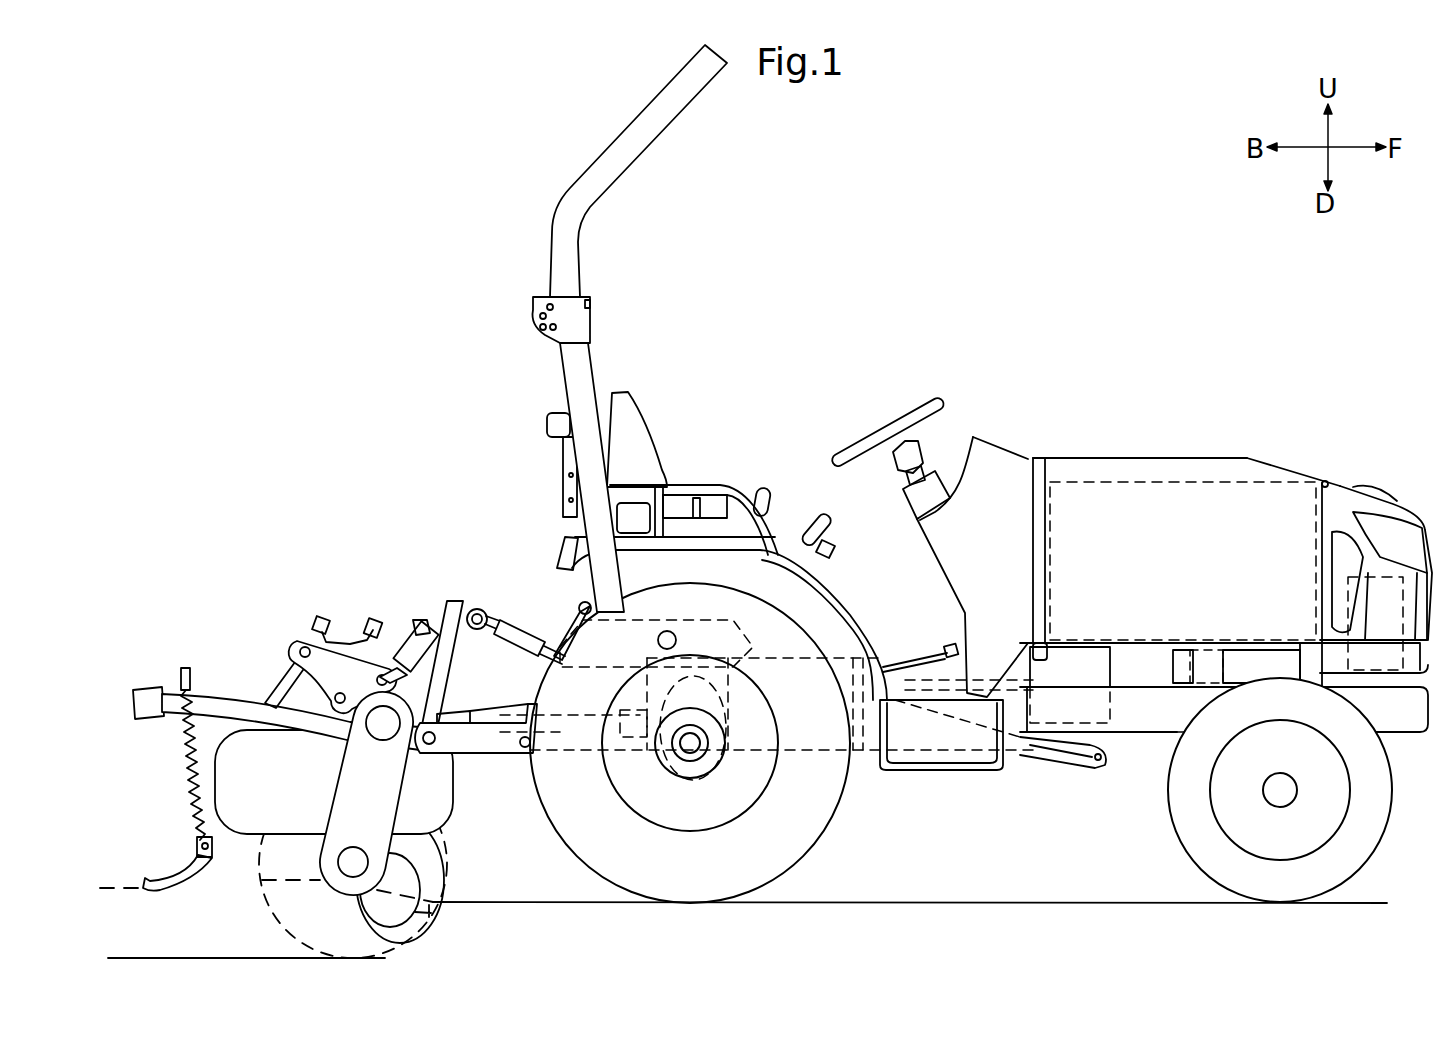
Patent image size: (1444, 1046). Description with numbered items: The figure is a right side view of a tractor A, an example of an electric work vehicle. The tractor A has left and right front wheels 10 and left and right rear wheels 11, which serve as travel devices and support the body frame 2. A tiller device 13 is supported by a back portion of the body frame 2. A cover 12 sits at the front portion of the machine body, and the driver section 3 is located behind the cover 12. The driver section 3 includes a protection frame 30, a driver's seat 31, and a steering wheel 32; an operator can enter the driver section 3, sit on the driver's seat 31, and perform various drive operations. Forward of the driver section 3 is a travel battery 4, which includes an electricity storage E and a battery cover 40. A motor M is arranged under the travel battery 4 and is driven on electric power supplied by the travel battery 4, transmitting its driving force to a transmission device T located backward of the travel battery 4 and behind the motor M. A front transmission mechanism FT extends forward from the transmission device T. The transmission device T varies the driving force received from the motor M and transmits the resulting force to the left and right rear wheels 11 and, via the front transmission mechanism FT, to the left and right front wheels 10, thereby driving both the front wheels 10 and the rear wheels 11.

The tractor A is at (300, 190).
The body frame 2 is at (1405, 725).
The driver section 3 is at (813, 313).
The travel battery 4 is at (1282, 455).
The front wheels 10 is at (1192, 842).
The rear wheels 11 is at (808, 843).
The cover 12 is at (1343, 483).
The tiller device 13 is at (315, 596).
The protection frame 30 is at (645, 118).
The driver's seat 31 is at (635, 416).
The steering wheel 32 is at (920, 408).
The battery cover 40 is at (1200, 455).
The electricity storage E is at (1075, 482).
The motor M is at (1106, 670).
The transmission device T is at (815, 757).
The front transmission mechanism FT is at (1080, 755).